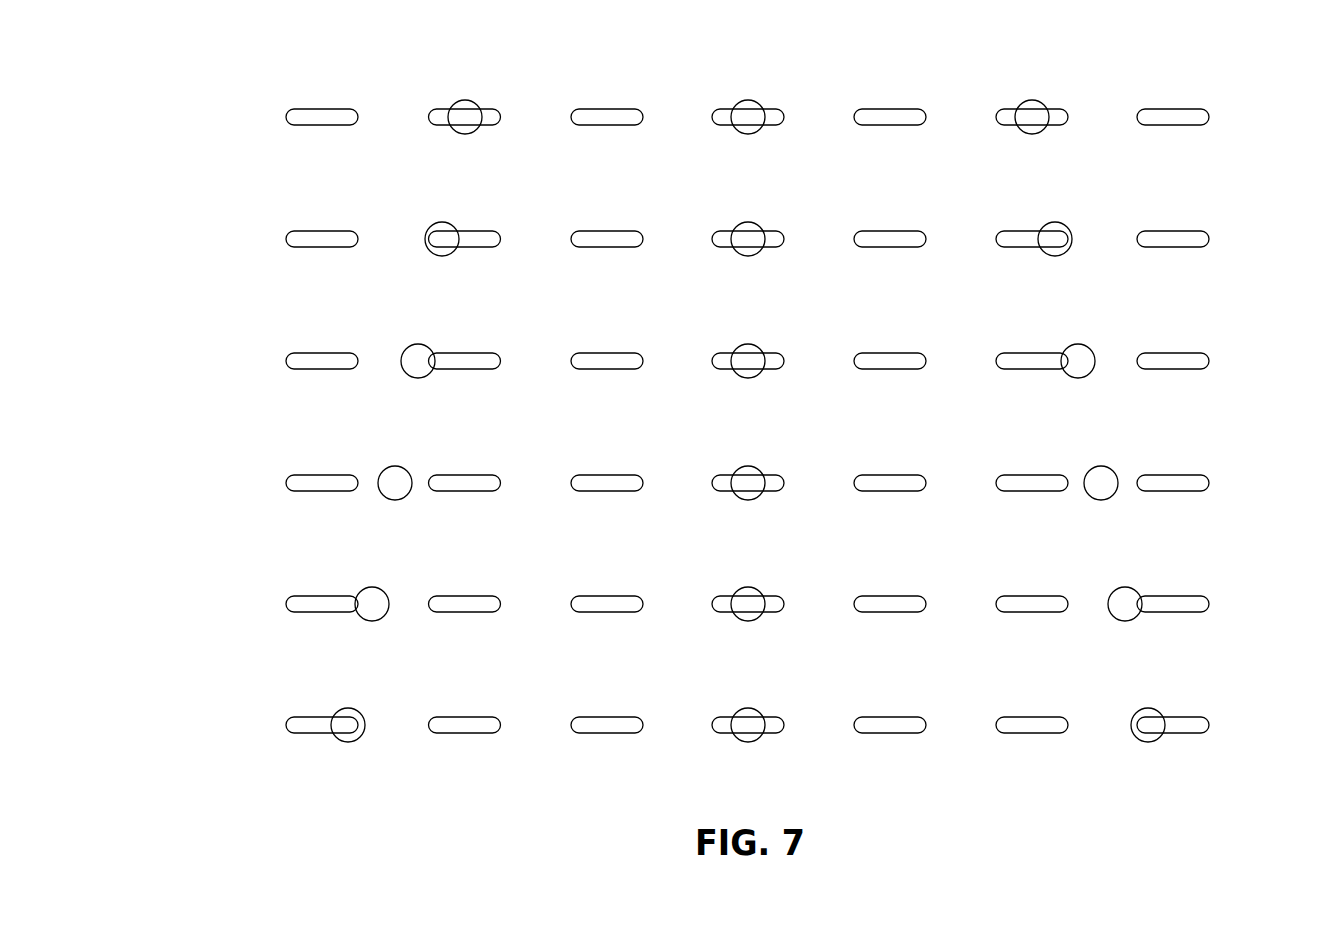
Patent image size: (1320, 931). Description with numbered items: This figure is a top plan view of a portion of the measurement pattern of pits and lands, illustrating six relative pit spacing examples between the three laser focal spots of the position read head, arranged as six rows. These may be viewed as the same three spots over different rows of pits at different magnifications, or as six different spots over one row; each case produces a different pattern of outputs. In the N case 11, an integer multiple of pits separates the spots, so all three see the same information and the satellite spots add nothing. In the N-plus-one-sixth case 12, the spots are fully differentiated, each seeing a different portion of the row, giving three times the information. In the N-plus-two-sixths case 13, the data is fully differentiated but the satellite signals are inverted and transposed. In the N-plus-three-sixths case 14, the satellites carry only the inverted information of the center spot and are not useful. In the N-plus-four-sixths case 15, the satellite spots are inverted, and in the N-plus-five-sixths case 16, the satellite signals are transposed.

The N relative pit spacing case 11 is at (250, 115).
The N+1/6 relative pit spacing case 12 is at (250, 238).
The N+2/6 relative pit spacing case 13 is at (250, 362).
The N+3/6 relative pit spacing case 14 is at (250, 484).
The N+4/6 relative pit spacing case 15 is at (250, 605).
The N+5/6 relative pit spacing case 16 is at (250, 725).